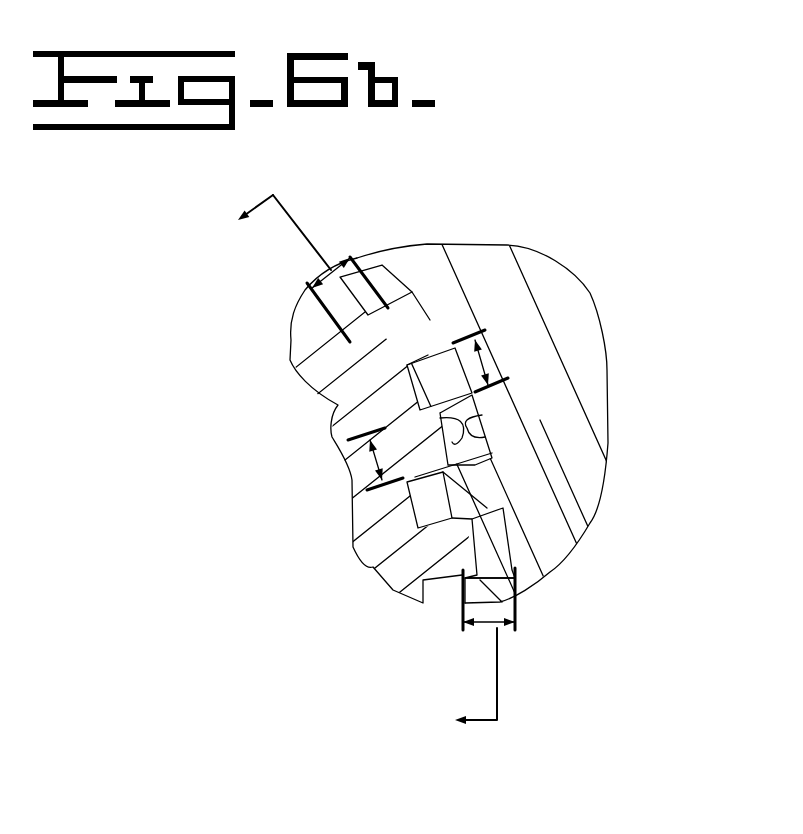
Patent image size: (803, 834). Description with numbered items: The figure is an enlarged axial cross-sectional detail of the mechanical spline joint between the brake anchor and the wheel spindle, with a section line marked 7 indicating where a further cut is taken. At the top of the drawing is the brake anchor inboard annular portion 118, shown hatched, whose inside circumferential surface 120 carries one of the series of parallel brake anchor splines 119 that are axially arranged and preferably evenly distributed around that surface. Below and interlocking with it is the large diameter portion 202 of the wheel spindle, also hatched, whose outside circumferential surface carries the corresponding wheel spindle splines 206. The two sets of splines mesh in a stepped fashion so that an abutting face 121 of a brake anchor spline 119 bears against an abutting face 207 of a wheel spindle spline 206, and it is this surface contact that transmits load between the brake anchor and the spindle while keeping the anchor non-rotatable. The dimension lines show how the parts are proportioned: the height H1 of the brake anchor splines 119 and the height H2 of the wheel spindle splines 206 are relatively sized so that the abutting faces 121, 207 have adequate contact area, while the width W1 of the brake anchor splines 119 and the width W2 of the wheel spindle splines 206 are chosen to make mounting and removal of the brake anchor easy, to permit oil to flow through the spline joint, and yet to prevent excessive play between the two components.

The brake anchor inboard annular portion 118 is at (550, 545).
The brake anchor splines 119 is at (480, 483).
The inside circumferential surface 120 is at (485, 437).
The abutting face 121 is at (416, 285).
The large diameter portion 202 is at (372, 574).
The wheel spindle splines 206 is at (440, 415).
The abutting face 207 is at (447, 575).
The height of the brake anchor splines H1 is at (497, 670).
The height of the wheel spindle splines H2 is at (336, 262).
The width of the brake anchor splines W1 is at (473, 363).
The width of the wheel spindle splines W2 is at (352, 488).
The section line 7- 7 is at (357, 465).